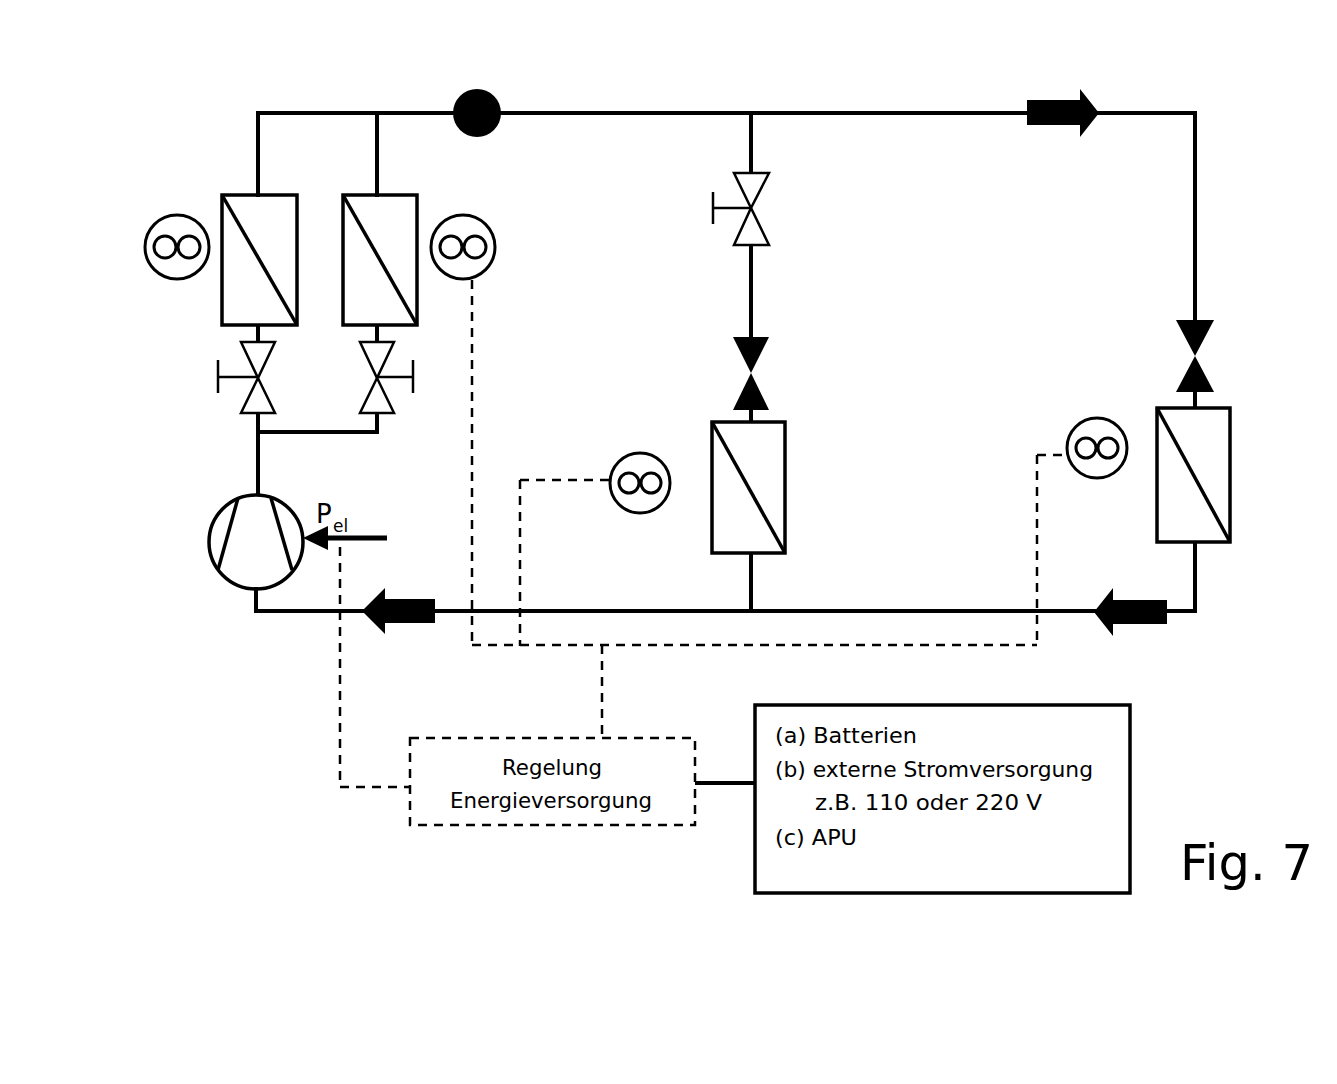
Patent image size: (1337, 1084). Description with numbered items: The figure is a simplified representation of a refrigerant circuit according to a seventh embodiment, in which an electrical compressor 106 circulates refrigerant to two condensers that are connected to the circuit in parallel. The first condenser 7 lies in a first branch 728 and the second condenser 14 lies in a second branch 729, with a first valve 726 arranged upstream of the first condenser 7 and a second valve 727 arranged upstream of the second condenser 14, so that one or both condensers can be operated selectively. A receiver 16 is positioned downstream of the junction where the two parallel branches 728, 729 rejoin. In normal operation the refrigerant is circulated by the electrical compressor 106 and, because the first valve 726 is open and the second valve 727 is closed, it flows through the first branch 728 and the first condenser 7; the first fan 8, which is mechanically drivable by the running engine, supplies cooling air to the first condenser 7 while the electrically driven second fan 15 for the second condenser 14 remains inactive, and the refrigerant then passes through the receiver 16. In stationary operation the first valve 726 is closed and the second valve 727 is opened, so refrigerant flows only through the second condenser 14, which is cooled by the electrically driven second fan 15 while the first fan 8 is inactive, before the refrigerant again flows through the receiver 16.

The first condenser 7 is at (252, 212).
The first fan 8 is at (167, 235).
The second condenser 14 is at (390, 237).
The second fan 15 is at (490, 230).
The receiver 16 is at (490, 92).
The electrical compressor 106 is at (248, 560).
The first valve 726 is at (248, 377).
The second valve 727 is at (385, 400).
The first branch 728 is at (252, 153).
The second branch 729 is at (377, 138).